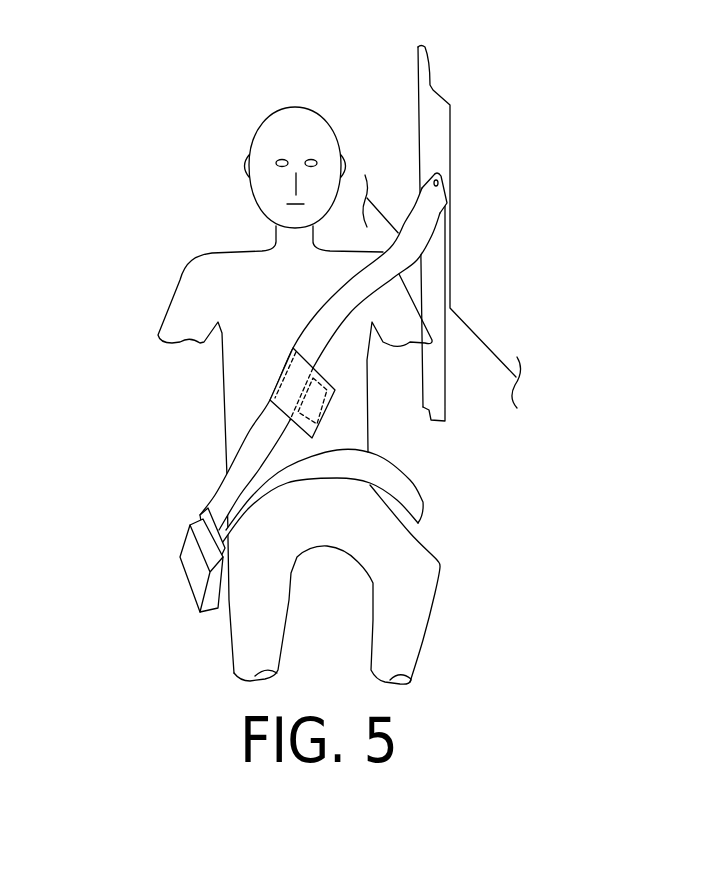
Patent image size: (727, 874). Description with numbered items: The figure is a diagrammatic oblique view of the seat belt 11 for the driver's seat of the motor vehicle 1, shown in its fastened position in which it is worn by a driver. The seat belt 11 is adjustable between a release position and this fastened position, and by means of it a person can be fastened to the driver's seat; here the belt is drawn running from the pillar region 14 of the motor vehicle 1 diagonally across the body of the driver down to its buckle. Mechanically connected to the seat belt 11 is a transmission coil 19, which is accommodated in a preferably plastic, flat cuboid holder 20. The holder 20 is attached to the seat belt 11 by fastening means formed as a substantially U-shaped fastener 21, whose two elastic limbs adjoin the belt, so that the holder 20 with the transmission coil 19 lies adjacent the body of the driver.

The motor vehicle 1 is at (525, 158).
The seat belt 11 is at (196, 492).
The pillar 14 is at (480, 314).
The transmission coil 19 is at (326, 390).
The holder 20 is at (313, 437).
The U-shaped fastener 21 is at (270, 379).